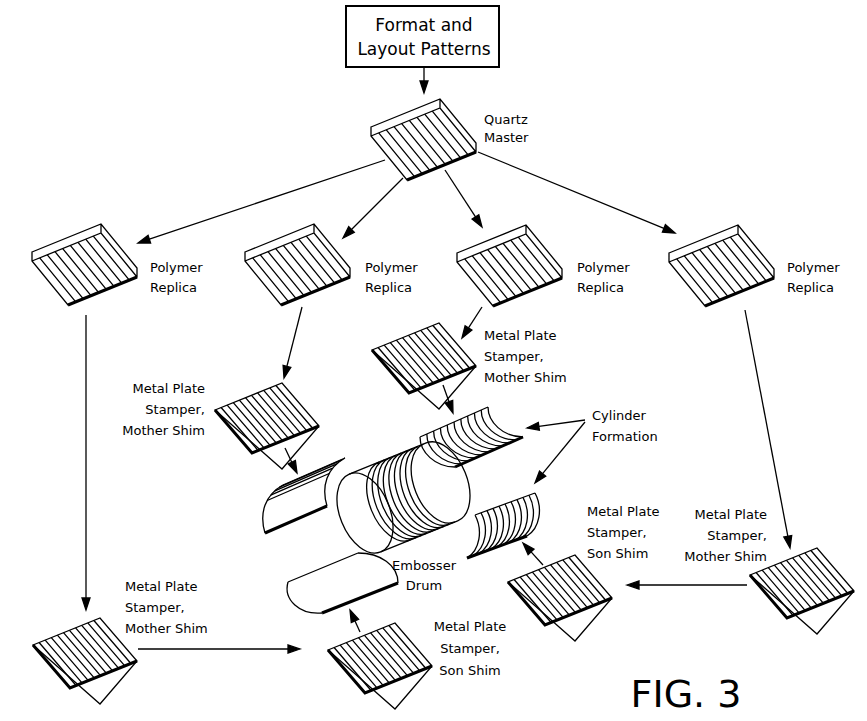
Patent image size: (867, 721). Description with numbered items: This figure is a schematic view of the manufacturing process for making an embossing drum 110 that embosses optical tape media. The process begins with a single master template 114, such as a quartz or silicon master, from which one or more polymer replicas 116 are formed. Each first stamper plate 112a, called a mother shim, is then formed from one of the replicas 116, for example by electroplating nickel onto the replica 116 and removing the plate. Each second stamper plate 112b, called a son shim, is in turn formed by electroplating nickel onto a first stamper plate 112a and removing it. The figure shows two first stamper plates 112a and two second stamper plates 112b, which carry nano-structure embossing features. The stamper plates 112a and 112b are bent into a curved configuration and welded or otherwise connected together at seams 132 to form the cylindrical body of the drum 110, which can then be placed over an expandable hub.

The master template 114 is at (371, 128).
The replica 116 is at (421, 279).
The first stamper plate 112a is at (443, 513).
The second stamper plate 112b is at (508, 632).
The embossing drum 110 is at (333, 537).
The seam 132 is at (395, 462).